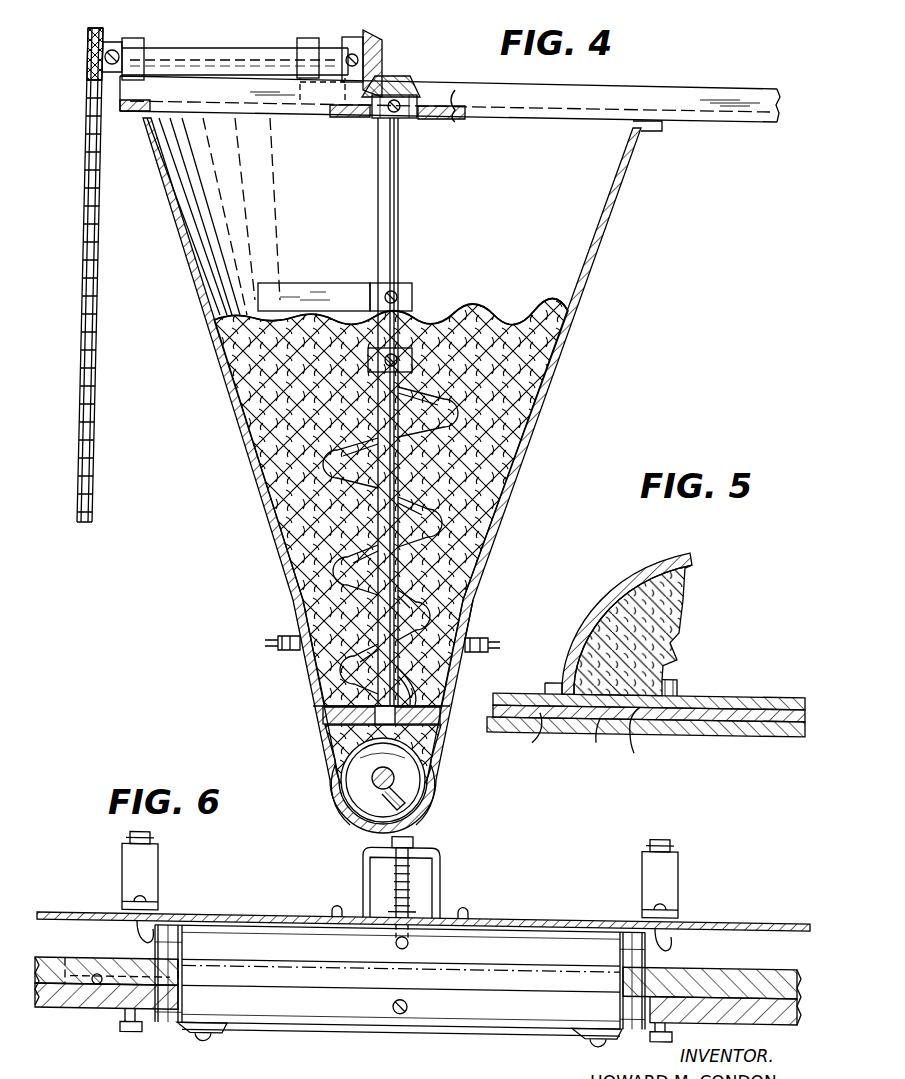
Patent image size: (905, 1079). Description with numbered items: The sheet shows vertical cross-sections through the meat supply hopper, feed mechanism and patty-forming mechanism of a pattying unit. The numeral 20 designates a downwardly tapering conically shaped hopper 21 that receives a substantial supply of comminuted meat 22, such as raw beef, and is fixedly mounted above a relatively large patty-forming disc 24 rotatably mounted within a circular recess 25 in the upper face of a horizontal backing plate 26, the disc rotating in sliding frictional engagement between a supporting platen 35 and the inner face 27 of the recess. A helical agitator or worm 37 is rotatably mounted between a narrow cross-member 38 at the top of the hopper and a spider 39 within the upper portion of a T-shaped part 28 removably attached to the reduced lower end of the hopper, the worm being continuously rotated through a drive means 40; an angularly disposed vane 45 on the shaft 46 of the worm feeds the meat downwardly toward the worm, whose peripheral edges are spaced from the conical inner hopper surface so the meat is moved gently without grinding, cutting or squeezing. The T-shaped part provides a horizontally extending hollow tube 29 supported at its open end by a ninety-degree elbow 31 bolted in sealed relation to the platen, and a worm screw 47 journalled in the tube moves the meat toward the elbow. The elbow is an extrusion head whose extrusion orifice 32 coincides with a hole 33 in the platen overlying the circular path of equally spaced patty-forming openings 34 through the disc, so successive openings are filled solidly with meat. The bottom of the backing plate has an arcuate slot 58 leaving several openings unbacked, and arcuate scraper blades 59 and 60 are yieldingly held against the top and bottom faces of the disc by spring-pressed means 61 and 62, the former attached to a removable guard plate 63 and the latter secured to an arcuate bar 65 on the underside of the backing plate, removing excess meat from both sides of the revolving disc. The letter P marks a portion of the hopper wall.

In FIG. 4, the hopper designation 20 is at (611, 226).
In FIG. 4, the hopper 21 is at (578, 310).
In FIG. 4, the comminuted meat 22 is at (536, 364).
In FIG. 5, the comminuted meat 22 is at (676, 600).
In FIG. 5, the patty-forming disc 24 is at (492, 712).
In FIG. 6, the patty-forming disc 24 is at (124, 960).
In FIG. 6, the circular recess 25 is at (74, 964).
In FIG. 5, the backing plate 26 is at (740, 734).
In FIG. 6, the backing plate 26 is at (60, 1008).
In FIG. 5, the inner face of recess 27 is at (609, 745).
In FIG. 6, the inner face of recess 27 is at (100, 984).
In FIG. 4, the T-shaped part 28 is at (323, 815).
In FIG. 4, the hollow tube 29 is at (430, 808).
In FIG. 5, the elbow 31 is at (594, 592).
In FIG. 5, the extrusion orifice 32 is at (650, 668).
In FIG. 5, the platen hole 33 is at (648, 740).
In FIG. 5, the patty-forming openings 34 is at (551, 740).
In FIG. 6, the patty-forming openings 34 is at (640, 982).
In FIG. 5, the supporting platen 35 is at (745, 690).
In FIG. 4, the helical agitator or worm 37 is at (440, 522).
In FIG. 4, the cross-member 38 is at (460, 116).
In FIG. 4, the spider 39 is at (440, 712).
In FIG. 4, the drive means 40 is at (266, 48).
In FIG. 4, the vane 45 is at (302, 292).
In FIG. 4, the worm shaft 46 is at (400, 208).
In FIG. 4, the worm screw 47 is at (412, 782).
In FIG. 6, the slot 58 is at (164, 1008).
In FIG. 6, the upper scraper blade 59 is at (556, 932).
In FIG. 6, the lower scraper blade 60 is at (530, 1022).
In FIG. 6, the spring-pressed means 61 is at (158, 878).
In FIG. 6, the spring-pressed means 62 is at (220, 1038).
In FIG. 6, the guard plate 63 is at (212, 912).
In FIG. 6, the arcuate bar 65 is at (322, 1024).
In FIG. 4, the hopper wall section P is at (537, 463).